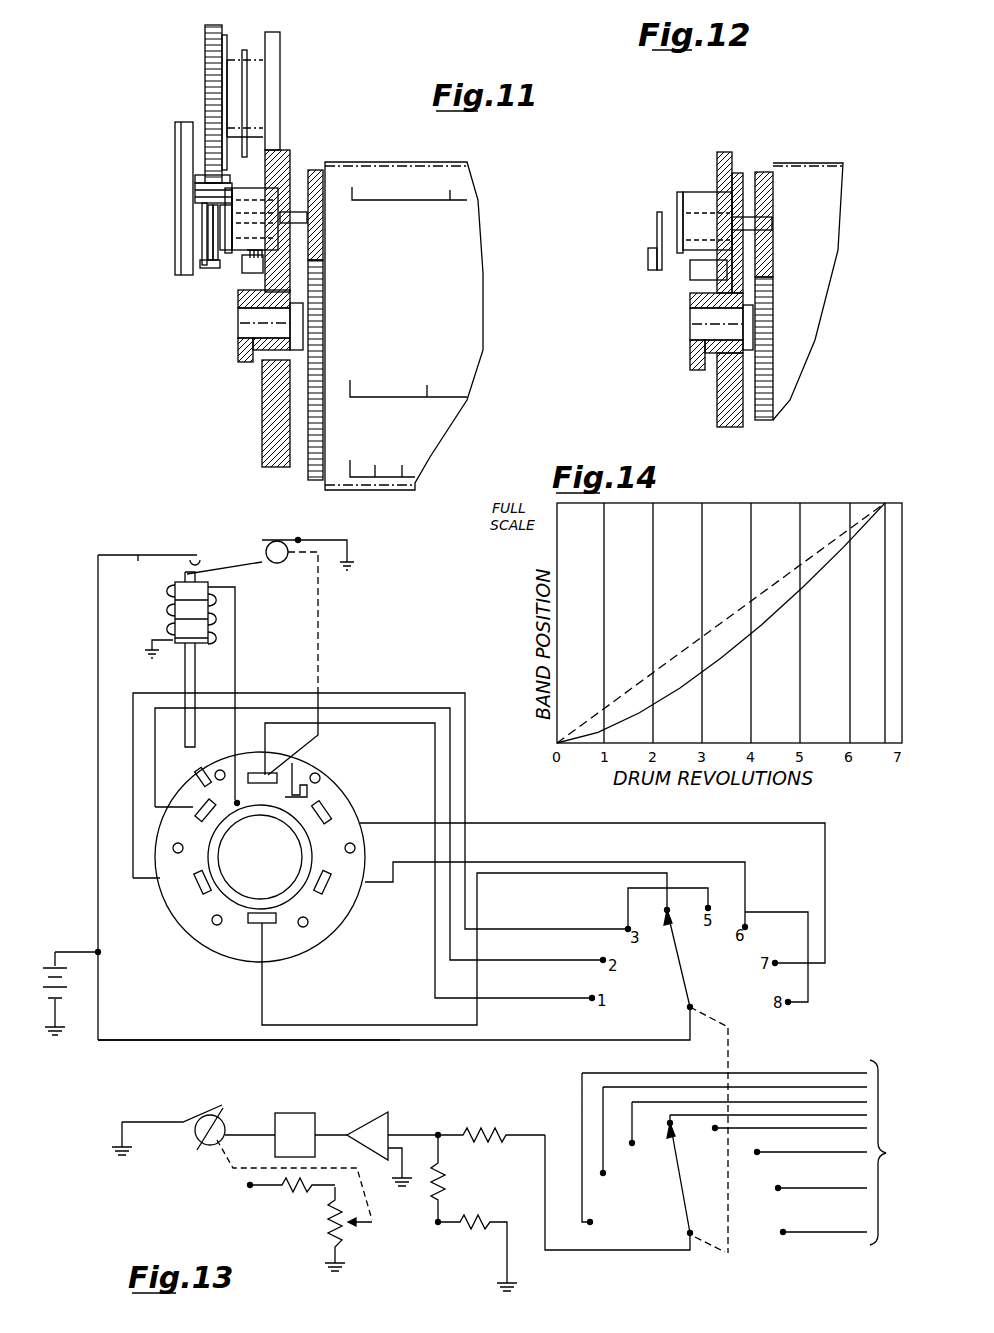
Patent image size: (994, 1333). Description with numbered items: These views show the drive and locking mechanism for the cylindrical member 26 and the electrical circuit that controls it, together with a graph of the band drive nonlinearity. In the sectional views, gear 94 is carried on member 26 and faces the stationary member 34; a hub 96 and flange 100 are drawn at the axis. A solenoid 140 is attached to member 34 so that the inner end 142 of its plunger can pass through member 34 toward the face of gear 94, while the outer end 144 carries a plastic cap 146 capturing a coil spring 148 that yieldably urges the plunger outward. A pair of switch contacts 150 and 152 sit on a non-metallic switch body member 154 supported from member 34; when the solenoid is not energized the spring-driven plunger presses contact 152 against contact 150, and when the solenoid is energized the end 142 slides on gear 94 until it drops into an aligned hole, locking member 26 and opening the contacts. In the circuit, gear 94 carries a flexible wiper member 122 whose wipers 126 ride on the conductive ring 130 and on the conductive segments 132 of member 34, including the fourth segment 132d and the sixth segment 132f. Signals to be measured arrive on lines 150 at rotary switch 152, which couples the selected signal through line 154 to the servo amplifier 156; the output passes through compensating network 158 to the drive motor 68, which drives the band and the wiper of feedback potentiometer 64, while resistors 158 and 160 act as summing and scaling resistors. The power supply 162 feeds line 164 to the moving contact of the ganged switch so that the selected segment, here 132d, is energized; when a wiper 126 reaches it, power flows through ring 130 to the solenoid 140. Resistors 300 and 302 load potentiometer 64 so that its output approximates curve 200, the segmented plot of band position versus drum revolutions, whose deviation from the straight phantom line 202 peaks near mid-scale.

In FIG. 11, the cylindrical member 26 is at (405, 175).
In FIG. 12, the cylindrical member 26 is at (820, 200).
In FIG. 11, the member 34 is at (268, 420).
In FIG. 12, the member 34 is at (720, 410).
In FIG. 13, the feedback potentiometer 64 is at (330, 1225).
In FIG. 13, the drive motor 68 is at (223, 1118).
In FIG. 11, the gear 94 is at (312, 172).
In FIG. 12, the gear 94 is at (768, 195).
In FIG. 11, the hub 96 is at (238, 343).
In FIG. 12, the hub 96 is at (692, 345).
In FIG. 11, the flange 100 is at (240, 360).
In FIG. 12, the flange 100 is at (692, 358).
In FIG. 13, the wiper member 122 is at (308, 780).
In FIG. 13, the wipers 126 is at (286, 822).
In FIG. 13, the conductive ring 130 is at (297, 870).
In FIG. 13, the conductive segments 132 is at (318, 742).
In FIG. 13, the fourth segment 132d is at (262, 925).
In FIG. 13, the sixth segment 132f is at (330, 815).
In FIG. 11, the solenoid 140 is at (257, 248).
In FIG. 12, the solenoid 140 is at (712, 198).
In FIG. 13, the solenoid 140 is at (210, 641).
In FIG. 11, the inner end of solenoid plunger 142 is at (297, 210).
In FIG. 12, the inner end of solenoid plunger 142 is at (752, 218).
In FIG. 11, the outer end of solenoid plunger 144 is at (197, 183).
In FIG. 11, the plastic cap 146 is at (213, 248).
In FIG. 11, the coil spring 148 is at (197, 197).
In FIG. 11, the switch contact / lines 150 is at (202, 213).
In FIG. 12, the switch contact / lines 150 is at (657, 222).
In FIG. 13, the switch contact / lines 150 is at (882, 1152).
In FIG. 11, the switch contact / rotary switch 152 is at (208, 232).
In FIG. 12, the switch contact / rotary switch 152 is at (679, 213).
In FIG. 13, the switch contact / rotary switch 152 is at (657, 1233).
In FIG. 11, the switch body member / line 154 is at (237, 272).
In FIG. 12, the switch body member / line 154 is at (695, 270).
In FIG. 13, the switch body member / line 154 is at (660, 978).
In FIG. 13, the servo amplifier 156 is at (375, 1122).
In FIG. 13, the compensating network 158 is at (300, 1118).
In FIG. 13, the resistor 160 is at (443, 1183).
In FIG. 13, the power supply 162 is at (45, 975).
In FIG. 13, the line 164 is at (205, 1040).
In FIG. 14, the curve 200 is at (683, 685).
In FIG. 14, the line 202 is at (733, 612).
In FIG. 13, the resistor 300 is at (290, 1195).
In FIG. 13, the loading resistor 302 is at (462, 1230).